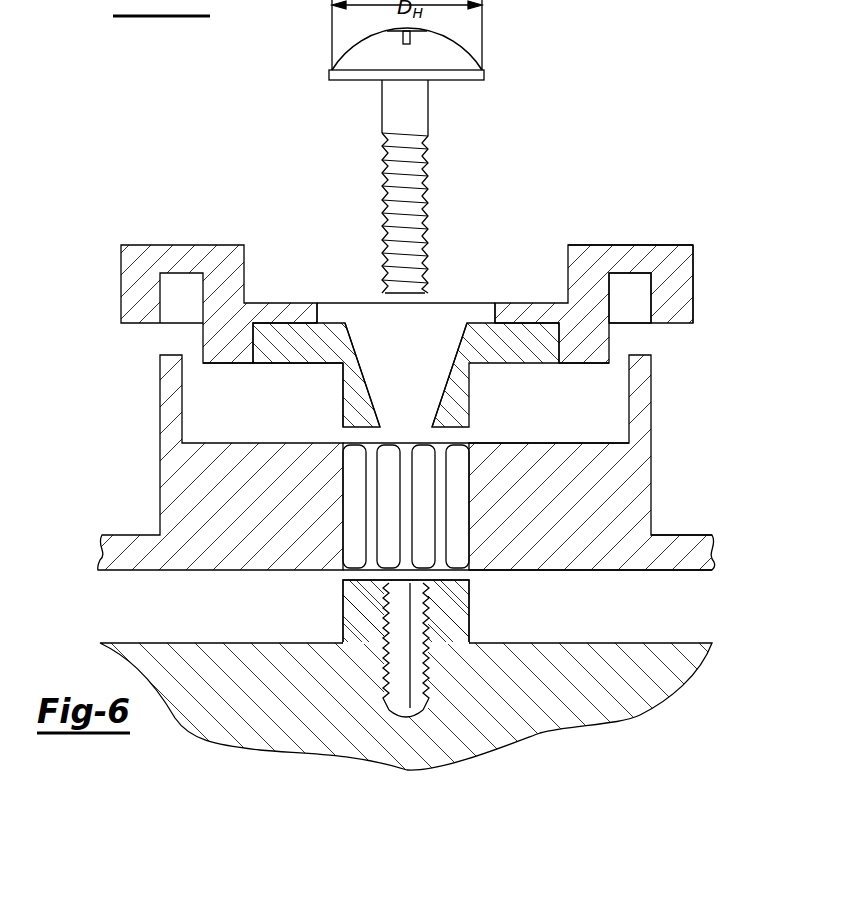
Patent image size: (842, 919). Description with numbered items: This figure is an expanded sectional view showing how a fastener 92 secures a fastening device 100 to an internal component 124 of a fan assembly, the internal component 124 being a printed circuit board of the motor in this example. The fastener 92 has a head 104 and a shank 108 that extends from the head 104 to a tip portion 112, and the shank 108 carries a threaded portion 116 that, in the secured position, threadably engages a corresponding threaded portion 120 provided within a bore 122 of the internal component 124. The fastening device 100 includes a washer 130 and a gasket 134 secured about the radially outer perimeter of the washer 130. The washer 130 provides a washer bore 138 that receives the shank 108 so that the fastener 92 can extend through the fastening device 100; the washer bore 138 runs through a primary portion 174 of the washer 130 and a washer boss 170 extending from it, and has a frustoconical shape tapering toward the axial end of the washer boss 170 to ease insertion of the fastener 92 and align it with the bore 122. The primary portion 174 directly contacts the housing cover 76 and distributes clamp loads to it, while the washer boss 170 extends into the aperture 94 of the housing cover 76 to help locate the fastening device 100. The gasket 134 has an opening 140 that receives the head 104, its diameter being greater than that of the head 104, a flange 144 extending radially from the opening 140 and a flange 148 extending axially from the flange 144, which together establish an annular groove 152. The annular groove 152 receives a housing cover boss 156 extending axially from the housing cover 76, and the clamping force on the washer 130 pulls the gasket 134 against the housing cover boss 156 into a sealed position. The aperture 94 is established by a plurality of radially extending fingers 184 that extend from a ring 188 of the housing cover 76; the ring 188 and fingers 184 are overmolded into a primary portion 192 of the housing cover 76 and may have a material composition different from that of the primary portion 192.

The fastener 92 is at (412, 190).
The head 104 is at (453, 55).
The shank 108 is at (393, 107).
The threaded portion 116 is at (437, 133).
The tip portion 112 is at (404, 296).
The fastening device 100 is at (160, 245).
The flange 144 is at (658, 245).
The flange 148 is at (693, 285).
The annular groove 152 is at (651, 312).
The opening 140 is at (317, 305).
The gasket 134 is at (600, 392).
The washer 130 is at (530, 363).
The primary portion 174 is at (275, 363).
The washer boss 170 is at (342, 407).
The washer bore 138 is at (435, 392).
The housing cover boss 156 is at (651, 412).
The housing cover 76 is at (620, 465).
The primary portion 192 is at (703, 535).
The ring 188 is at (563, 572).
The fingers 184 is at (352, 572).
The aperture 94 is at (462, 570).
The threaded portion 120 is at (408, 645).
The bore 122 is at (390, 715).
The internal component 124 is at (632, 707).